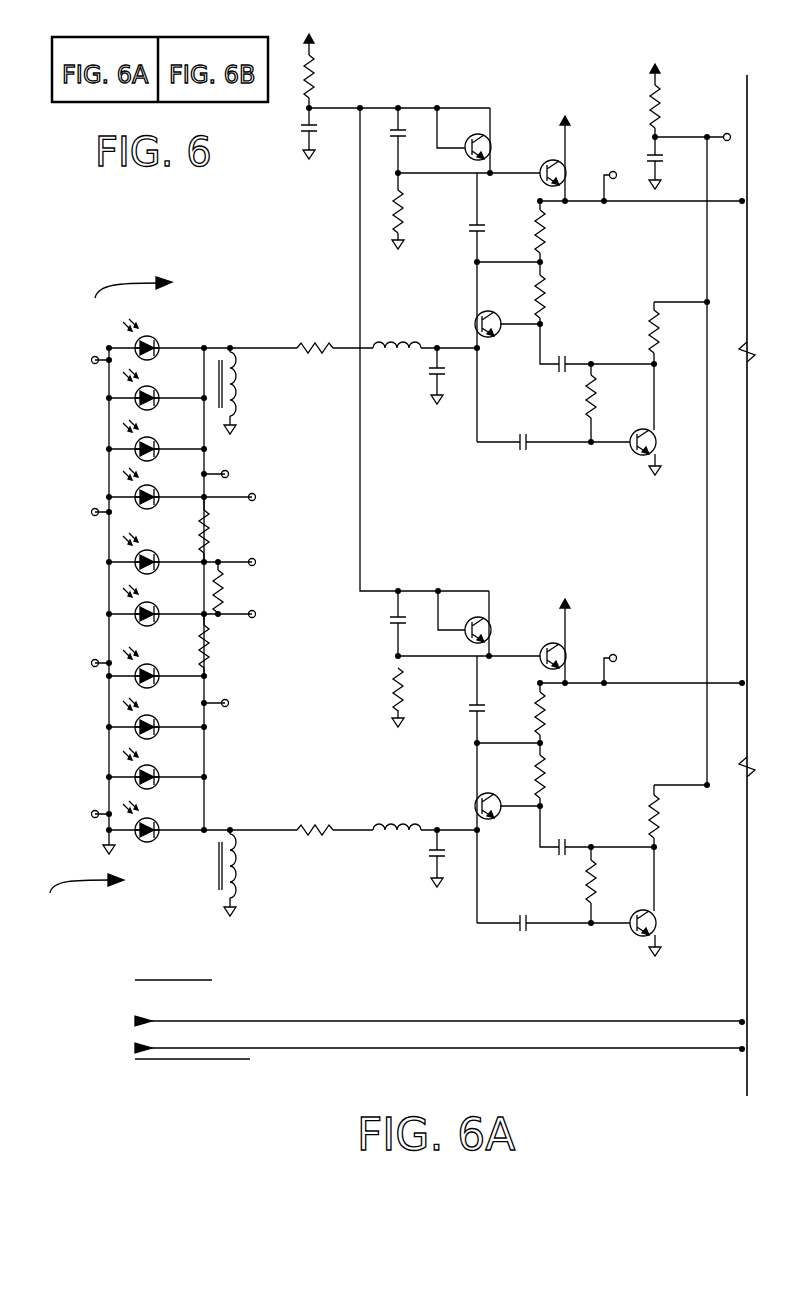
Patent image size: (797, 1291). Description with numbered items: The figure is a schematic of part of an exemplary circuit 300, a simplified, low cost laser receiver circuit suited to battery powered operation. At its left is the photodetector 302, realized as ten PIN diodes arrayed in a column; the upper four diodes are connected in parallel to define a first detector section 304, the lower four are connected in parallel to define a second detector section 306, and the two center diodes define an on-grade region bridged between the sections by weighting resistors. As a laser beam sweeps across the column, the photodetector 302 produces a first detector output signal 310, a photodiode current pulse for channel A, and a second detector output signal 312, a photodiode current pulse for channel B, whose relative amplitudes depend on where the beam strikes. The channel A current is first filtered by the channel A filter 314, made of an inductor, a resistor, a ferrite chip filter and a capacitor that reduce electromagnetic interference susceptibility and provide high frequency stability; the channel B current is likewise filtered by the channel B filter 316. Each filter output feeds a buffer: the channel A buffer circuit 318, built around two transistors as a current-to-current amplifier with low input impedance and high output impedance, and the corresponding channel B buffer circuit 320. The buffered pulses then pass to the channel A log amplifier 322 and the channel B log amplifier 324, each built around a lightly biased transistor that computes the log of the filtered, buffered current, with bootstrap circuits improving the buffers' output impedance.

The circuit 300 is at (588, 42).
The photodetector 302 is at (92, 580).
The first detector section 304 is at (92, 405).
The second detector section 306 is at (92, 765).
The first detector output signal 310 is at (214, 348).
The second detector output signal 312 is at (181, 832).
The channel A filter 314 is at (314, 392).
The channel B filter 316 is at (316, 778).
The channel A buffer circuit 318 is at (474, 456).
The channel B buffer circuit 320 is at (452, 938).
The channel A log amplifier 322 is at (533, 96).
The channel B log amplifier 324 is at (478, 574).